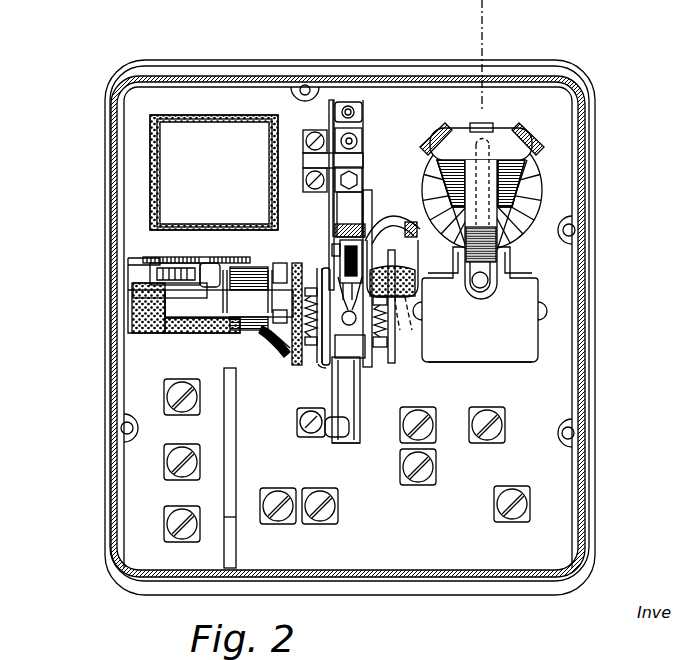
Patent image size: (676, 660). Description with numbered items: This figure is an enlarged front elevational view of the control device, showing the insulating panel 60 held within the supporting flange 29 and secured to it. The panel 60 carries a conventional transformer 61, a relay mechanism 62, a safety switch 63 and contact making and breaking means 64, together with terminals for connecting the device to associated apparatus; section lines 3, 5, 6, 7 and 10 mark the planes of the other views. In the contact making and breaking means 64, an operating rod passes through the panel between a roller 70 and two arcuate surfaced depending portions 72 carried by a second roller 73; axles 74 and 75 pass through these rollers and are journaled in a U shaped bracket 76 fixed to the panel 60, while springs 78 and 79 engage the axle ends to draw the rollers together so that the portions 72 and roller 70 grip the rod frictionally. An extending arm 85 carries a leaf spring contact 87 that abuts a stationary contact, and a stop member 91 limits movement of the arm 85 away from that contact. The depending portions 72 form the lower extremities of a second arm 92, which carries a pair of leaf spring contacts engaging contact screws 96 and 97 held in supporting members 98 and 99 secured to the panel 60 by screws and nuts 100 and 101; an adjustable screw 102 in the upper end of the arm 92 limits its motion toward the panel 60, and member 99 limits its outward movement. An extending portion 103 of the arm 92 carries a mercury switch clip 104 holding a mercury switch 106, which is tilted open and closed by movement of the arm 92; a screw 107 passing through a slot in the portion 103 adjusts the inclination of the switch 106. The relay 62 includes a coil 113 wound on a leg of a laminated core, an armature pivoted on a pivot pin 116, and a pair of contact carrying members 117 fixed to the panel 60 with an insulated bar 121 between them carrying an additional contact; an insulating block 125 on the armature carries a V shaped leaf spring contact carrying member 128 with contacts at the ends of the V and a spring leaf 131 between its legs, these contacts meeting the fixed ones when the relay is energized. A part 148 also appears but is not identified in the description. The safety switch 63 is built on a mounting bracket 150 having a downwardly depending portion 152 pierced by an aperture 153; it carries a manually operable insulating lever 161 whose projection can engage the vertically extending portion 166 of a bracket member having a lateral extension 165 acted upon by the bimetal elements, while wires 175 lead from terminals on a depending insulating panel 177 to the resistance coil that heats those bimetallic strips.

The section line 10- 10 is at (132, 62).
The section line 3- 3 is at (352, 100).
The section line 5- 5 is at (408, 403).
The section line 6- 6 is at (548, 107).
The section line 7- 7 is at (478, 297).
The supporting flange 29 is at (596, 128).
The insulating panel 60 is at (468, 103).
The transformer 61 is at (145, 170).
The relay mechanism 62 is at (537, 272).
The safety switch 63 is at (140, 338).
The contact making and breaking means 64 is at (360, 180).
The roller 70 is at (368, 370).
The arcuate surfaced depending portions 72 is at (326, 367).
The second roller 73 is at (340, 268).
The axle 74 is at (366, 350).
The axle 75 is at (308, 290).
The U shaped bracket 76 is at (318, 364).
The spring 78 is at (388, 327).
The spring 79 is at (299, 324).
The extending arm 85 is at (361, 430).
The leaf spring contact 87 is at (350, 443).
The stop member 91 is at (326, 440).
The second arm 92 is at (360, 148).
The contact screw 96 is at (360, 170).
The contact screw 97 is at (358, 136).
The supporting member 98 is at (338, 208).
The supporting member 99 is at (334, 132).
The screws and nuts 100 is at (306, 180).
The screws and nuts 101 is at (306, 141).
The adjustable screw 102 is at (356, 110).
The extending portion 103 is at (335, 246).
The mercury switch clip 104 is at (390, 222).
The mercury switch 106 is at (405, 256).
The screw 107 is at (362, 254).
The coil 113 is at (535, 182).
The pivot pin 116 is at (547, 312).
The contact carrying members 117 is at (430, 133).
The insulated bar 121 is at (465, 125).
The insulating block 125 is at (490, 343).
The V shaped leaf spring contact carrying member 128 is at (507, 205).
The spring leaf 131 is at (491, 165).
The pivot hole 148 is at (484, 286).
The mounting bracket 150 is at (236, 263).
The second downwardly depending portion 152 is at (147, 286).
The aperture 153 is at (128, 262).
The manually operable lever 161 is at (148, 274).
The lateral extension 165 is at (183, 298).
The vertically extending portion 166 is at (213, 262).
The wires 175 is at (266, 340).
The depending insulating panel 177 is at (292, 352).